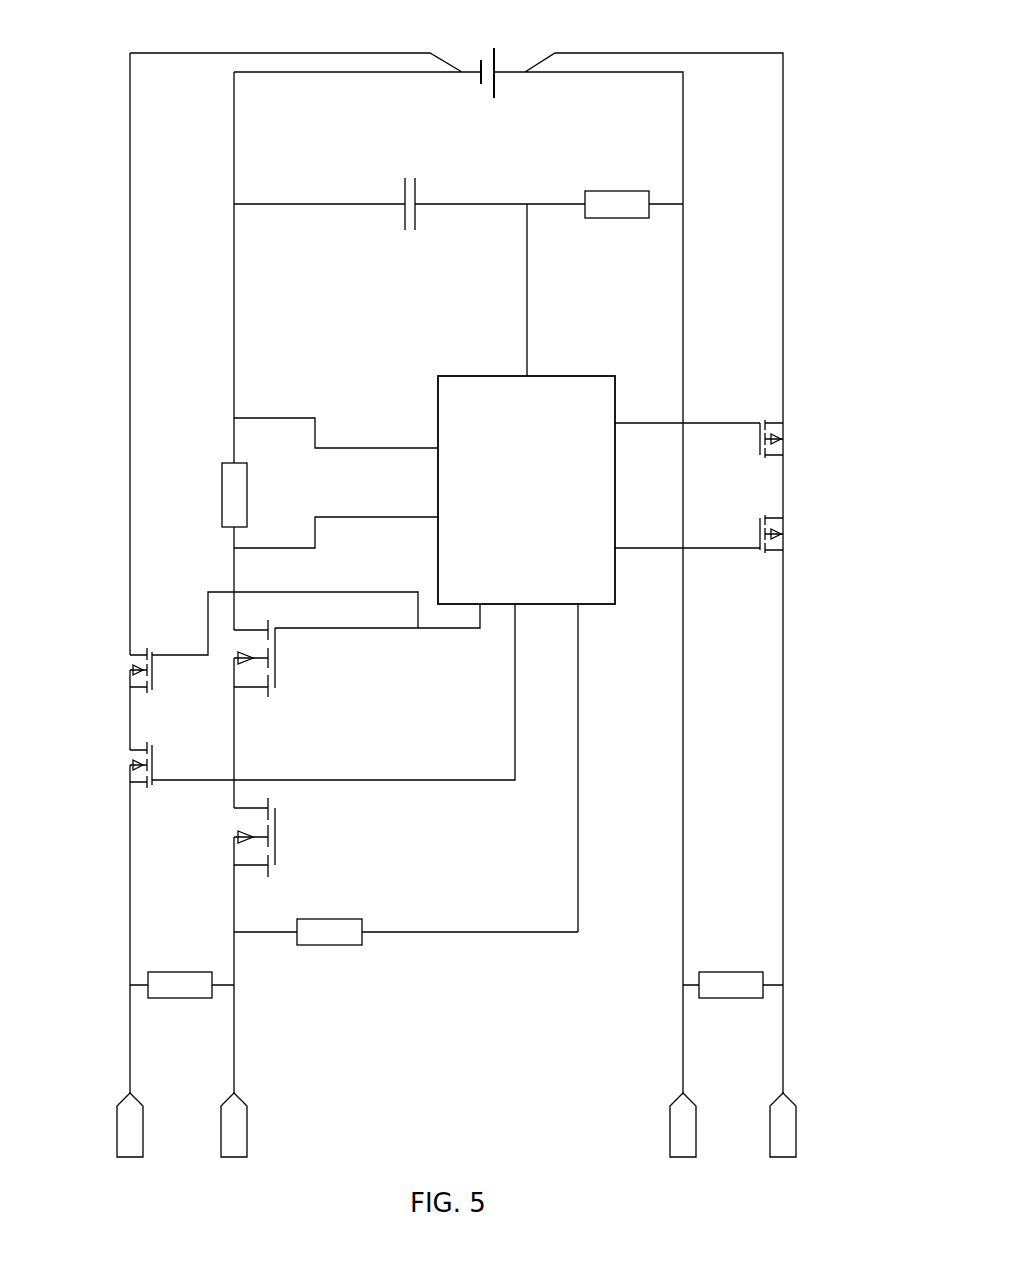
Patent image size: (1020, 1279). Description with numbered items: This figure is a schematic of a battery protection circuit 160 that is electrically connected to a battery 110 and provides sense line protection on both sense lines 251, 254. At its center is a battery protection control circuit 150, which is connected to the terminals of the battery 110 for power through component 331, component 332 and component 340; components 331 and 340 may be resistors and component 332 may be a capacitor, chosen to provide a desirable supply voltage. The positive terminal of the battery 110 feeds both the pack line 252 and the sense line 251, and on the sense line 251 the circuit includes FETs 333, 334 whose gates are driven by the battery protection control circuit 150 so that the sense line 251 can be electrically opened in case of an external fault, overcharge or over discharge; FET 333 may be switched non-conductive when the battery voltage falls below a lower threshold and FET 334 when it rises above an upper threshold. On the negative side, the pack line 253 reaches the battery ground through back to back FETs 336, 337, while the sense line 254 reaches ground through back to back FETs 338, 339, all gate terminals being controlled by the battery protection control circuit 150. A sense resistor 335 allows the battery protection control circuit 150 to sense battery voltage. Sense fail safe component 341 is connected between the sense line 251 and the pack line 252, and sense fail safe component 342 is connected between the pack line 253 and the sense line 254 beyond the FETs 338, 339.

The battery protection circuit 160 is at (97, 79).
The battery 110 is at (497, 62).
The battery protection control circuit 150 is at (597, 372).
The component 331 is at (610, 191).
The component 332 is at (422, 196).
The FET 333 is at (786, 435).
The FET 334 is at (786, 528).
The sense resistor 335 is at (248, 497).
The FET 336 is at (277, 677).
The FET 337 is at (277, 815).
The FET 338 is at (132, 652).
The FET 339 is at (147, 790).
The component 340 is at (362, 940).
The sense fail safe component 341 is at (728, 1000).
The sense fail safe component 342 is at (177, 1000).
The sense line 251 is at (785, 1158).
The pack line 252 is at (685, 1158).
The pack line 253 is at (234, 1158).
The sense line 254 is at (131, 1158).